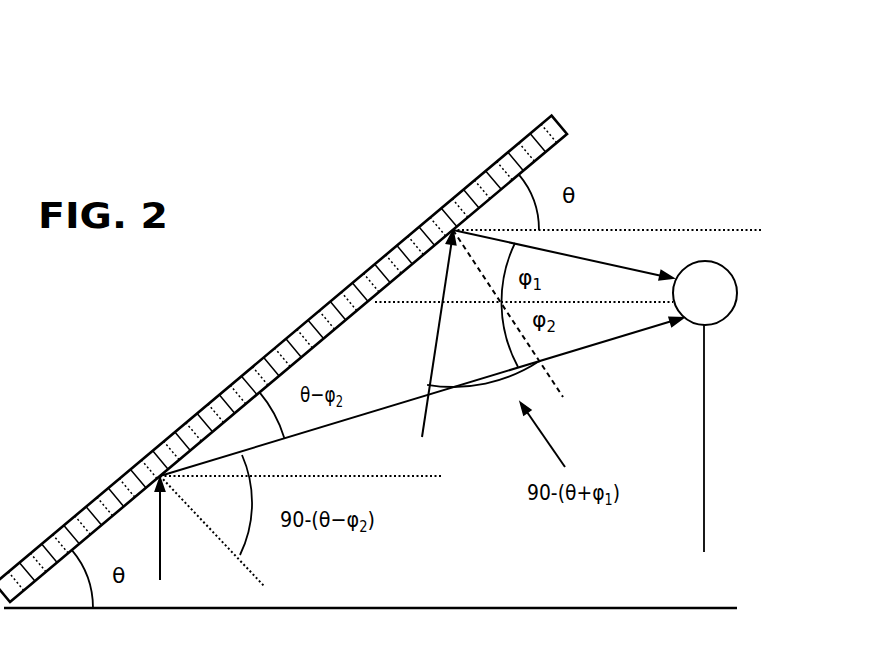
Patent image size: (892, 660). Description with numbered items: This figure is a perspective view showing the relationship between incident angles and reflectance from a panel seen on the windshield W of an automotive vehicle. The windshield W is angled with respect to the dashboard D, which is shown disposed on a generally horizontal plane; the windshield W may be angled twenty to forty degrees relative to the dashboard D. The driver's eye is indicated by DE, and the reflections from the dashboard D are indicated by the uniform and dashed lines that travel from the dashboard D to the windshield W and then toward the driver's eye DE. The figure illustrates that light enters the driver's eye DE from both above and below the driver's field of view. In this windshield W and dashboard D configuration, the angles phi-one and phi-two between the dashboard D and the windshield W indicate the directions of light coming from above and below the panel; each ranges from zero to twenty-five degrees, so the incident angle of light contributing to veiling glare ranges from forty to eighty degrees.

The windshield W is at (495, 133).
The driver's eye DE is at (722, 292).
The dashboard D is at (449, 606).